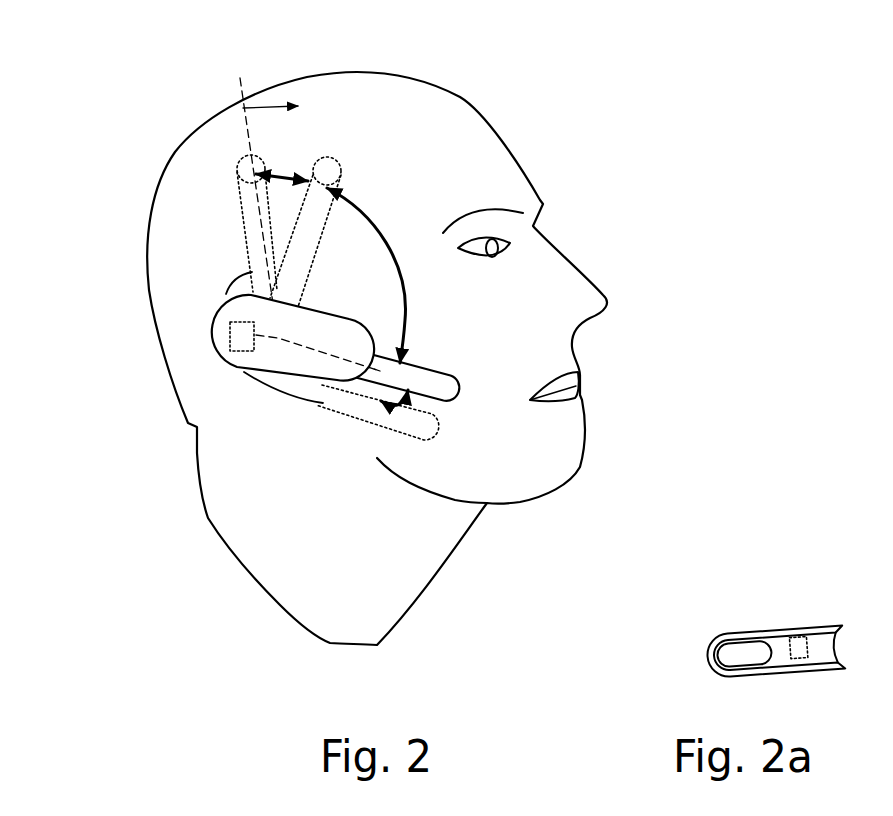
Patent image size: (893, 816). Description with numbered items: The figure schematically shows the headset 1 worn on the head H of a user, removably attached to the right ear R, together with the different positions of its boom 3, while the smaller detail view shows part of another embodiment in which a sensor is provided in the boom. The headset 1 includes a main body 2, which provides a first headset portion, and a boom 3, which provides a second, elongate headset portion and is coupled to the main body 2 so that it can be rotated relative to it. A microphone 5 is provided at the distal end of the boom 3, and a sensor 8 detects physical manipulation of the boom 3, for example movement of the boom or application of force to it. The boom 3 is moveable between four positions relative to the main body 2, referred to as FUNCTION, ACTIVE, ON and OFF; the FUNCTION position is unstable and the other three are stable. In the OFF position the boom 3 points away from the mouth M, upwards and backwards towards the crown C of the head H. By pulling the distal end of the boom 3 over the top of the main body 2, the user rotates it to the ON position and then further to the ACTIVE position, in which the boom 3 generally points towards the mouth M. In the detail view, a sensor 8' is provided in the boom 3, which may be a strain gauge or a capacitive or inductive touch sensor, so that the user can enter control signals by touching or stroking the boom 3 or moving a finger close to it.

In FIG. 2, the headset 1 is at (201, 273).
In FIG. 2, the main body 2 is at (223, 343).
In FIG. 2, the boom 3 is at (380, 378).
In FIG. 2A, the boom 3 is at (765, 628).
In FIG. 2A, the microphone 5 is at (736, 659).
In FIG. 2, the sensor 8 is at (143, 332).
In FIG. 2A, the sensor 8' is at (795, 606).
In FIG. 2, the crown C is at (227, 108).
In FIG. 2, the head H is at (564, 121).
In FIG. 2, the mouth M is at (568, 406).
In FIG. 2, the right ear R is at (286, 386).